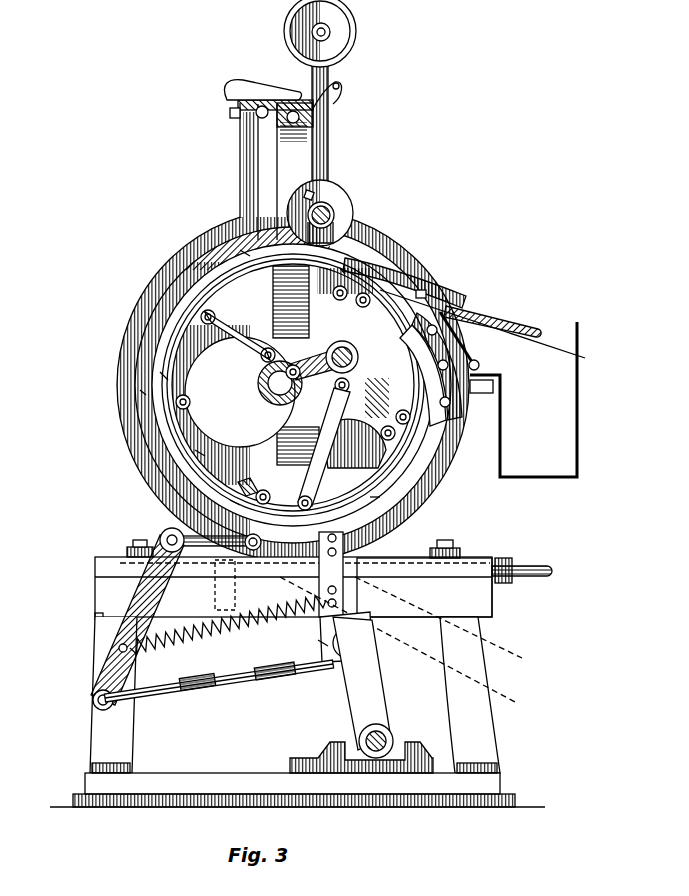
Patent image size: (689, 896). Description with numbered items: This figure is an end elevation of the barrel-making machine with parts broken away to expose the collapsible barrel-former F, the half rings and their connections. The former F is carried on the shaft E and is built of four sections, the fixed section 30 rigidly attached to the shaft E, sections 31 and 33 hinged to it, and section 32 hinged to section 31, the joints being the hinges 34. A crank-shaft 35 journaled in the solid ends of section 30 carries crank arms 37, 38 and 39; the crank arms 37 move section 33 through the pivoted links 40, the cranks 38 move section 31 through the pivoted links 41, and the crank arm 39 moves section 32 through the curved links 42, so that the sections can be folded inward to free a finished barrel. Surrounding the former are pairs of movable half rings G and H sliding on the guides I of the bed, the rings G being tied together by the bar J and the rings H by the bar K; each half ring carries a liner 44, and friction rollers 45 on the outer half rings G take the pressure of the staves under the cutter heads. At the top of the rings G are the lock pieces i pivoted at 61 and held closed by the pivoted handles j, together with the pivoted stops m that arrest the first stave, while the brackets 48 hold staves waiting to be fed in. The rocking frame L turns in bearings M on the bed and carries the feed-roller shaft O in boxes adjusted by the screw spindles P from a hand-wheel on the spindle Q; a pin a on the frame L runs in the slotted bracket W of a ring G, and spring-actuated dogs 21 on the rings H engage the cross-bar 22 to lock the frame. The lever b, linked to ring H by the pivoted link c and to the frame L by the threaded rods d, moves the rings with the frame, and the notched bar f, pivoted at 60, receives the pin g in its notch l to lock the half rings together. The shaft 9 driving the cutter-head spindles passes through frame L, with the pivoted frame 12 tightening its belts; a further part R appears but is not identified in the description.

The spindle Q is at (330, 32).
The spring-actuated dogs 21 is at (338, 92).
The cross-bar 22 is at (300, 117).
The screw spindles P is at (329, 146).
The disk R is at (351, 204).
The feed-roller shaft O is at (330, 218).
The hinges 34 is at (345, 280).
The barrel former section 33 is at (244, 254).
The half ring H is at (198, 284).
The barrel-former F is at (212, 332).
The liner 44 is at (164, 378).
The crank arm 39 is at (102, 388).
The barrel former section 32 is at (200, 452).
The crank arms 37 is at (238, 329).
The pivoted links 40 is at (202, 379).
The shaft E is at (293, 385).
The fixed barrel former section 30 is at (346, 346).
The cranks 38 is at (350, 385).
The pivoted links 41 is at (329, 449).
The curved links 42 is at (253, 474).
The pivot 61 is at (425, 280).
The lock pieces i is at (420, 290).
The crank-shaft 35 is at (418, 300).
The pivoted handles j is at (490, 320).
The stops m is at (468, 341).
The friction rollers 45 is at (455, 340).
The brackets 48 is at (578, 398).
The half ring G is at (463, 432).
The barrel former section 31 is at (380, 497).
The bracket W is at (320, 534).
The bar J is at (455, 548).
The pivoted link c is at (235, 502).
The bar K is at (128, 546).
The notched bar f is at (546, 566).
The lever b is at (128, 597).
The pin g is at (279, 574).
The pin a is at (355, 605).
The guides I is at (492, 600).
The pivot 60 is at (451, 624).
The pivoted frame 12 is at (318, 646).
The rocking frame L is at (370, 672).
The notch l is at (402, 649).
The pivoted rods d is at (166, 690).
The shaft 9 is at (394, 738).
The bearings M is at (340, 758).